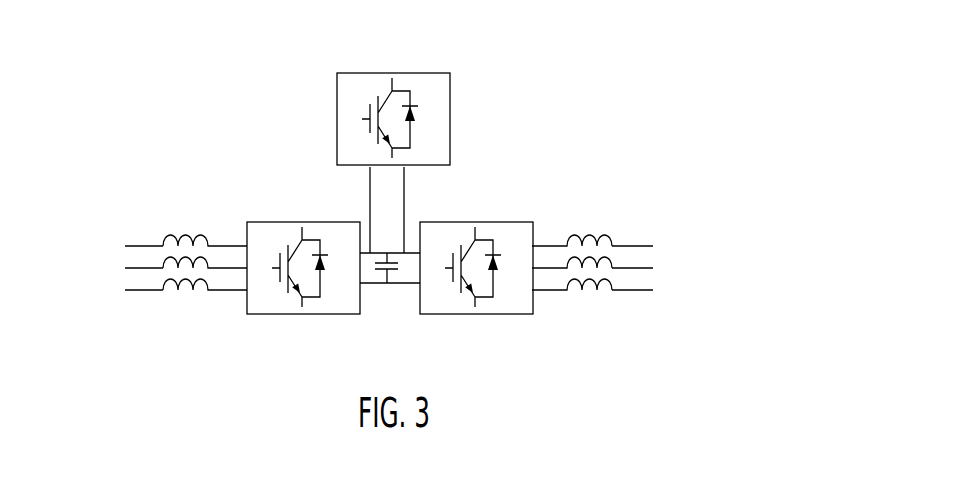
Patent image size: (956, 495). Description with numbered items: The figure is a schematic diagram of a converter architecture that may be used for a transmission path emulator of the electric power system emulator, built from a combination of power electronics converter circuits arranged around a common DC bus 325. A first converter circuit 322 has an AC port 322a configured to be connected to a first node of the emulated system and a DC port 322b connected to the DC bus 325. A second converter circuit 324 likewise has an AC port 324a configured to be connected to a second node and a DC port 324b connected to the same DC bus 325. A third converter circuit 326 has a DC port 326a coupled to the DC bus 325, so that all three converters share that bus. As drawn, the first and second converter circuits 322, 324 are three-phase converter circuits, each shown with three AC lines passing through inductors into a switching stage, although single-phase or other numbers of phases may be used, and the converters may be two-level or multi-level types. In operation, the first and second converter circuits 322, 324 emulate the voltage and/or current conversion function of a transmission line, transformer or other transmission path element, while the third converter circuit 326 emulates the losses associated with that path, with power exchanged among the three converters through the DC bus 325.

The first converter circuit 322 is at (162, 283).
The AC port 322a is at (98, 249).
The DC port 322b is at (371, 299).
The second converter circuit 324 is at (638, 269).
The AC port 324a is at (661, 256).
The DC port 324b is at (399, 299).
The DC bus 325 is at (397, 243).
The third converter circuit 326 is at (377, 73).
The DC port 326a is at (362, 175).